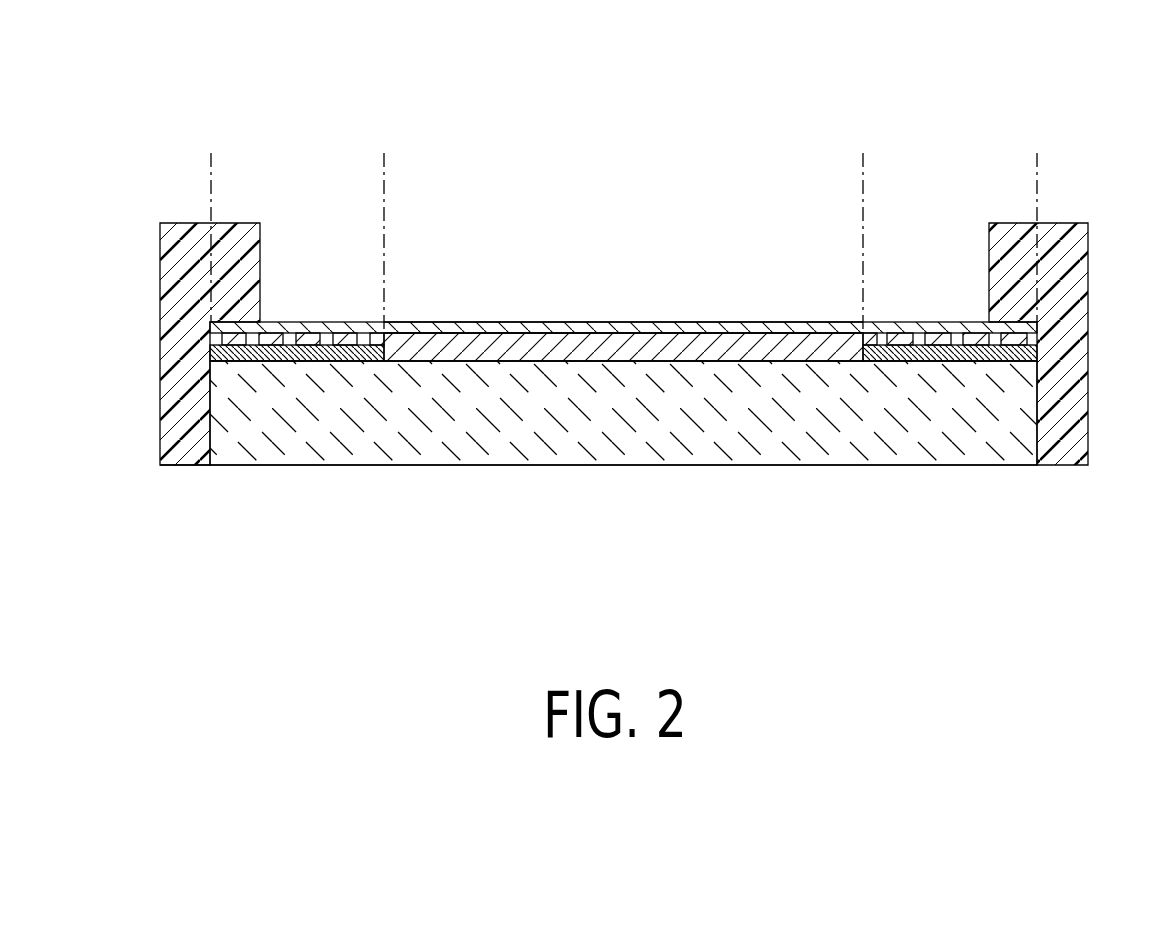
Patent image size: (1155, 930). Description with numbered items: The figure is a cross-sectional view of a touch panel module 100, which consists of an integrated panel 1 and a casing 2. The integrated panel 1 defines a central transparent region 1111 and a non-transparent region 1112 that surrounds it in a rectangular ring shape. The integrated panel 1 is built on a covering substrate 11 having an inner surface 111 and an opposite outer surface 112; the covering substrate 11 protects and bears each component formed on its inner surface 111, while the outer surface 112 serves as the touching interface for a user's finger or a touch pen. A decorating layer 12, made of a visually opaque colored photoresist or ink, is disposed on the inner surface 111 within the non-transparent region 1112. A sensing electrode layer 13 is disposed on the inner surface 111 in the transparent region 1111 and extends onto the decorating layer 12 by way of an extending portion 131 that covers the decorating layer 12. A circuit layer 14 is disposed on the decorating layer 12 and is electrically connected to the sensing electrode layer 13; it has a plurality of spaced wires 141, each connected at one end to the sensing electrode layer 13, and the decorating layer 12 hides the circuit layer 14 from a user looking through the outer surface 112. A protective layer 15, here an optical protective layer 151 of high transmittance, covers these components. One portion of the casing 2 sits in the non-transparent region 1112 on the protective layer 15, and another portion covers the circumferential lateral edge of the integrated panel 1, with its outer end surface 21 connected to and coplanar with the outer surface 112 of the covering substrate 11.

The touch panel module 100 is at (138, 97).
The integrated panel 1 is at (514, 308).
The covering substrate 11 is at (995, 594).
The inner surface 111 is at (632, 361).
The outer surface 112 is at (988, 467).
The transparent region 1111 is at (863, 159).
The non-transparent region 1112 is at (1037, 159).
The decorating layer 12 is at (1030, 349).
The sensing electrode layer 13 is at (797, 322).
The extending portion 131 is at (377, 330).
The circuit layer 14 is at (962, 228).
The wires 141 is at (928, 333).
The protective layer 15 is at (710, 211).
The optical protective layer 151 is at (662, 322).
The casing 2 is at (158, 243).
The outer end surface 21 is at (190, 465).